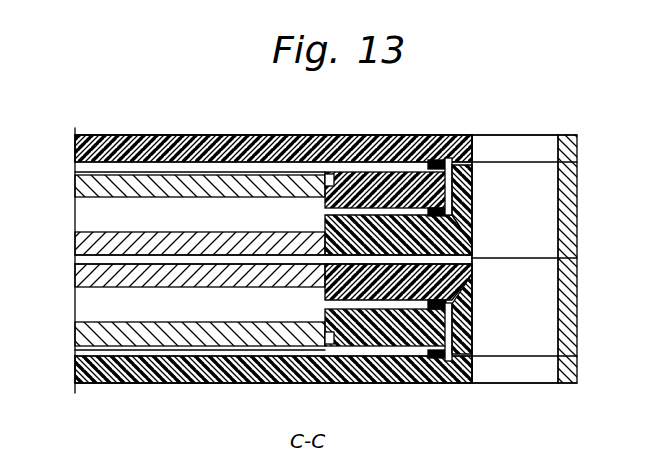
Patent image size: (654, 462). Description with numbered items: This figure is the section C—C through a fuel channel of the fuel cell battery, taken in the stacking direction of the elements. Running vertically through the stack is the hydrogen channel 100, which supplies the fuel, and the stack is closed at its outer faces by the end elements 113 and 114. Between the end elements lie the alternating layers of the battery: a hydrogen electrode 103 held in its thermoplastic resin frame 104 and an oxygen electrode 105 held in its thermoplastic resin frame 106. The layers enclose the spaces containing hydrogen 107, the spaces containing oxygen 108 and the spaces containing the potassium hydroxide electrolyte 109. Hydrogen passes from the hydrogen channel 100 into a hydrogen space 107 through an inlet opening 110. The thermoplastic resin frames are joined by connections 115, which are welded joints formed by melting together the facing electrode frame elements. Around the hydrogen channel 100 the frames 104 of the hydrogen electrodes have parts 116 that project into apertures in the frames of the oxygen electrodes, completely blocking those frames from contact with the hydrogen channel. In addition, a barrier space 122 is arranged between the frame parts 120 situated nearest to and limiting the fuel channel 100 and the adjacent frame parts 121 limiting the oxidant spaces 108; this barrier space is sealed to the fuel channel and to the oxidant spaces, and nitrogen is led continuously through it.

The hydrogen channel 100 is at (538, 138).
The hydrogen electrode 103 is at (92, 240).
The thermoplastic resin frame of the hydrogen electrode 104 is at (474, 224).
The oxygen electrode 105 is at (92, 188).
The thermoplastic resin frame of the oxygen electrode 106 is at (392, 188).
The hydrogen space 107 is at (92, 262).
The oxygen space 108 is at (86, 164).
The electrolyte space 109 is at (92, 213).
The hydrogen inlet opening 110 is at (474, 265).
The end element 113 is at (112, 150).
The end element 114 is at (136, 370).
The connection between thermoplastic resin frames 115 is at (447, 158).
The projecting part of the hydrogen electrode frame 116 is at (474, 181).
The frame part nearest the fuel channel 120 is at (474, 205).
The frame part limiting the oxidant space 121 is at (428, 188).
The barrier space 122 is at (469, 152).